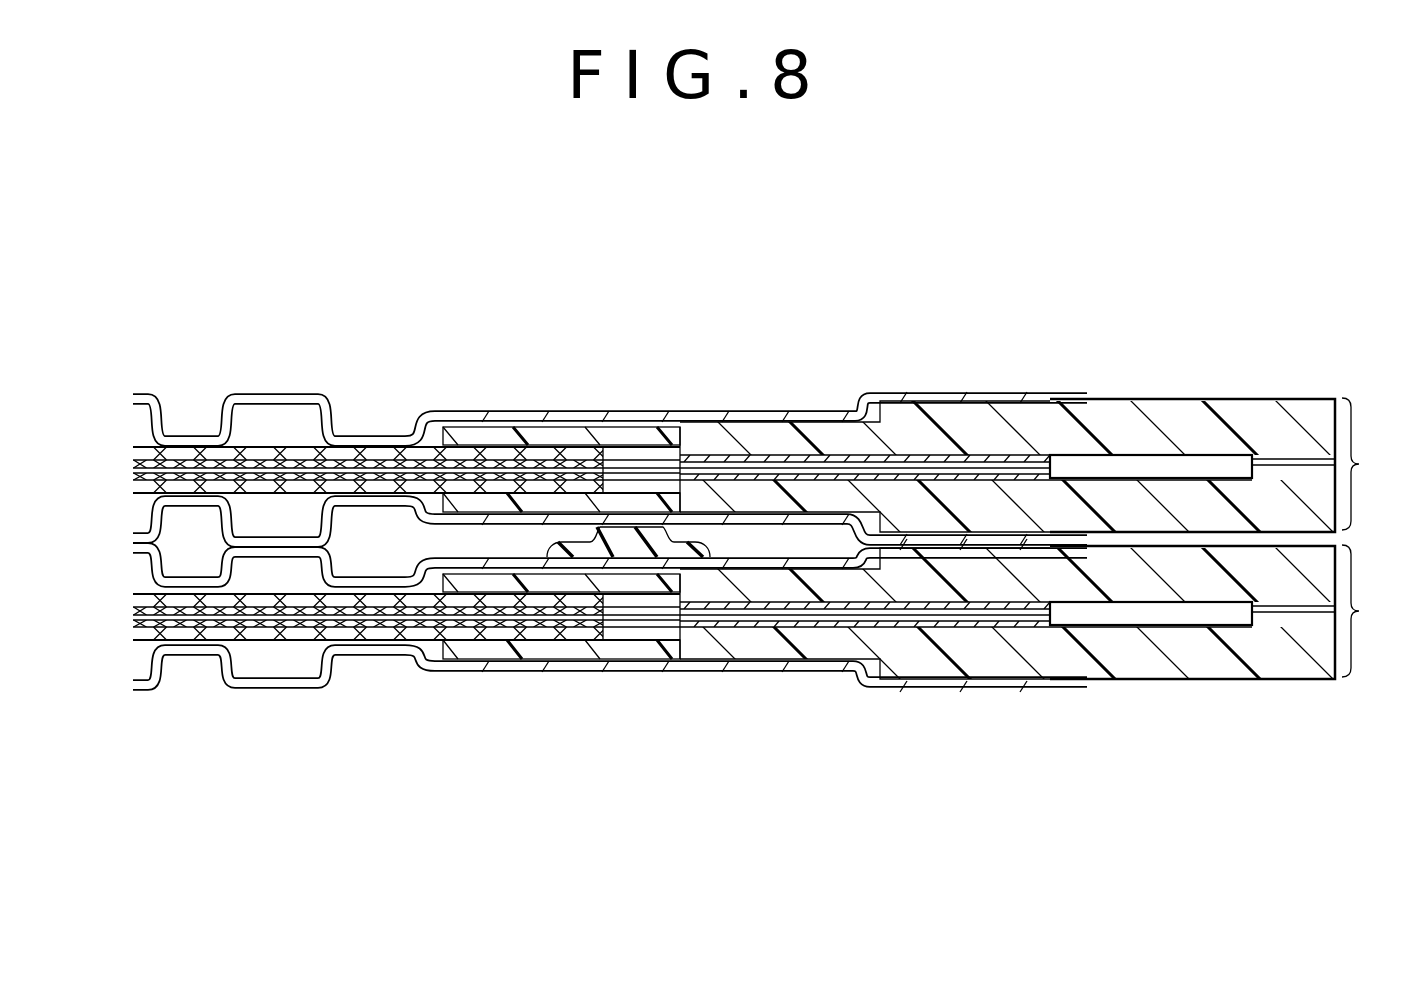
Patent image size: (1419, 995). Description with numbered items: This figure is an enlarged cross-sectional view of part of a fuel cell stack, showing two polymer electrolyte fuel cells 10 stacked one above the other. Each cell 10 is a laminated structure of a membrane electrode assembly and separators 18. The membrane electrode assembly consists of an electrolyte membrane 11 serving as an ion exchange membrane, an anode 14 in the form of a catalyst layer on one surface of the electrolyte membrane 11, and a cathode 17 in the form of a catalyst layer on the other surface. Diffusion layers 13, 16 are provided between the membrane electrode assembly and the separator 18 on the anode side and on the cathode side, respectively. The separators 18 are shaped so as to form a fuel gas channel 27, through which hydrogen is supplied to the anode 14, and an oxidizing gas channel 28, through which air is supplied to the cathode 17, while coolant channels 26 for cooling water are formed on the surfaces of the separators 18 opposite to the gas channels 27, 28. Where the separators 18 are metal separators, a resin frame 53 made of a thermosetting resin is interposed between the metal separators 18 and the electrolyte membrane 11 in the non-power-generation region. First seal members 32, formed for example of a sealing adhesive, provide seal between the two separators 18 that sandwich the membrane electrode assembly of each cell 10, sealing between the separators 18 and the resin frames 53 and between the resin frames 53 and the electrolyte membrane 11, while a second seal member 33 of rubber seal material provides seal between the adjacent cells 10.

The polymer electrolyte fuel cell 10 is at (1227, 538).
The electrolyte membrane 11 is at (185, 432).
The diffusion layer 13 is at (295, 460).
The electrode (anode, fuel electrode) 14 is at (260, 467).
The diffusion layer 16 is at (213, 488).
The electrode (cathode, air electrode) 17 is at (188, 477).
The separator 18 is at (513, 410).
The coolant channel 26 is at (188, 660).
The fuel gas channel 27 is at (318, 428).
The oxidizing gas channel 28 is at (340, 437).
The first seal member 32 is at (873, 477).
The second seal member 33 is at (620, 540).
The resin frame 53 is at (763, 497).